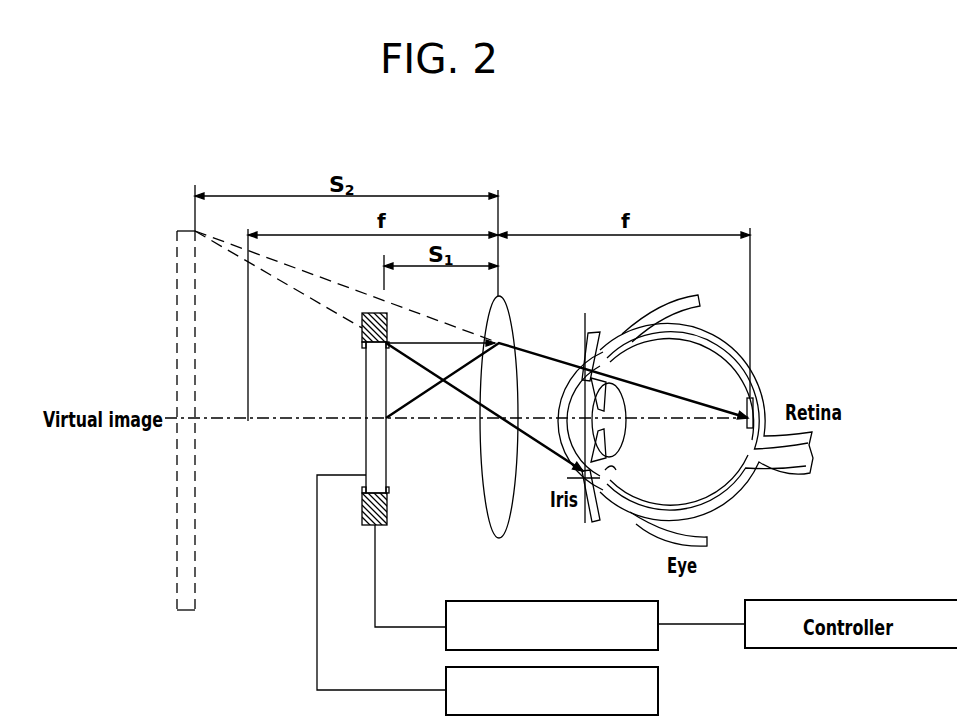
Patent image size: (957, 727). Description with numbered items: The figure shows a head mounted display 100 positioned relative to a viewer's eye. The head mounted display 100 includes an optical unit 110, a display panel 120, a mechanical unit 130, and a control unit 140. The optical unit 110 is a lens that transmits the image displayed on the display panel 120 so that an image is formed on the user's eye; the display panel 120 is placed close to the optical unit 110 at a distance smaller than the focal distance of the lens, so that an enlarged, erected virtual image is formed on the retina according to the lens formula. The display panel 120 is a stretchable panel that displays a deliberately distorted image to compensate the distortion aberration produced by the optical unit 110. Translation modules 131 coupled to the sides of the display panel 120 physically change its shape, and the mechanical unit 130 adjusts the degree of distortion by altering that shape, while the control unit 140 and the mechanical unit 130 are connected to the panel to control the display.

The head mounted display 100 is at (590, 194).
The optical unit 110 is at (481, 466).
The display panel 120 is at (366, 455).
The mechanical unit 130 is at (660, 607).
The translation module 131 is at (362, 332).
The control unit 140 is at (660, 689).